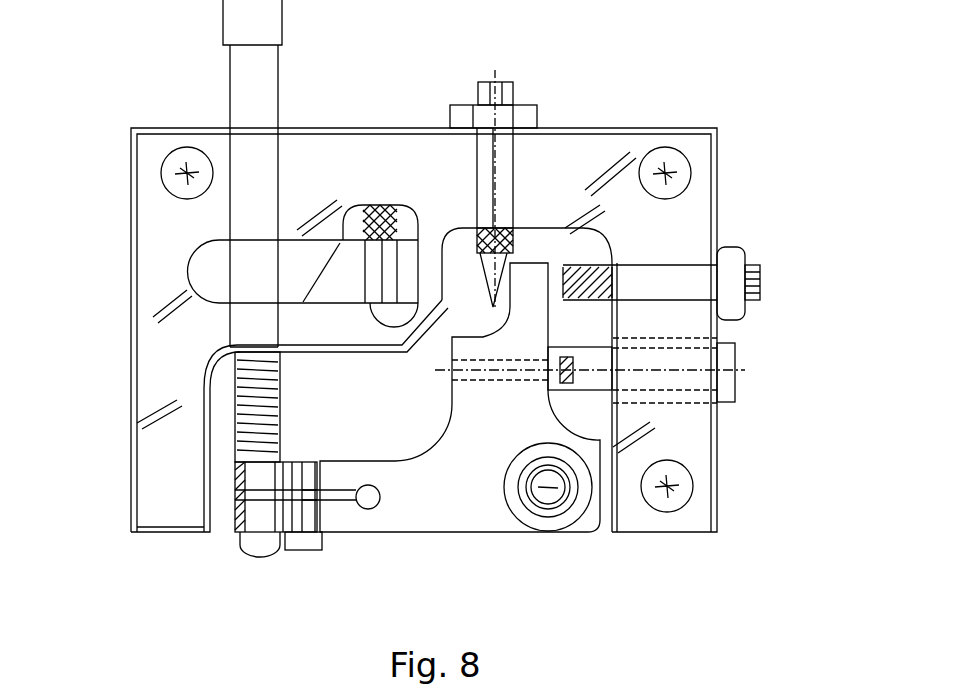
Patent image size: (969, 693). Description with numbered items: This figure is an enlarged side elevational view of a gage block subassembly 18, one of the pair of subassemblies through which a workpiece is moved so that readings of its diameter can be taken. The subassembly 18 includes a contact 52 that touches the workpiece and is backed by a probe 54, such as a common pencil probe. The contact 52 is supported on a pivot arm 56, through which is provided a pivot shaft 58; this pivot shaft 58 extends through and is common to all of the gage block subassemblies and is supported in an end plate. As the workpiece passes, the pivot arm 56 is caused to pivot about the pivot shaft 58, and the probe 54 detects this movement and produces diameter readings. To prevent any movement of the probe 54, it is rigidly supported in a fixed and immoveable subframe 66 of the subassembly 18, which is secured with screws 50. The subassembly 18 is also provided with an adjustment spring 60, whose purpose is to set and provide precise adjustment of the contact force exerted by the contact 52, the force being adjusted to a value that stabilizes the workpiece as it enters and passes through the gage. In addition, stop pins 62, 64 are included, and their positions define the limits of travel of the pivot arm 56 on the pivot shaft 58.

The gage block subassembly 18 is at (690, 85).
The mounting screws 50 is at (183, 172).
The contact 52 is at (240, 546).
The probe 54 is at (233, 391).
The pivot arm 56 is at (415, 510).
The pivot shaft 58 is at (566, 535).
The adjustment spring 60 is at (690, 348).
The stop pin 62 is at (655, 275).
The stop pin 64 is at (513, 180).
The subframe 66 is at (152, 284).